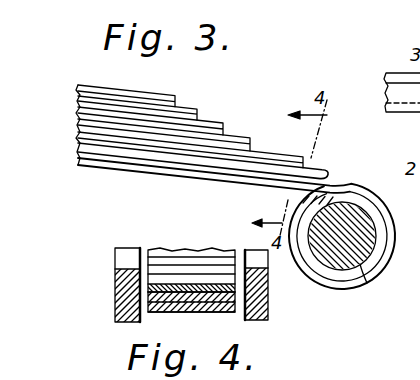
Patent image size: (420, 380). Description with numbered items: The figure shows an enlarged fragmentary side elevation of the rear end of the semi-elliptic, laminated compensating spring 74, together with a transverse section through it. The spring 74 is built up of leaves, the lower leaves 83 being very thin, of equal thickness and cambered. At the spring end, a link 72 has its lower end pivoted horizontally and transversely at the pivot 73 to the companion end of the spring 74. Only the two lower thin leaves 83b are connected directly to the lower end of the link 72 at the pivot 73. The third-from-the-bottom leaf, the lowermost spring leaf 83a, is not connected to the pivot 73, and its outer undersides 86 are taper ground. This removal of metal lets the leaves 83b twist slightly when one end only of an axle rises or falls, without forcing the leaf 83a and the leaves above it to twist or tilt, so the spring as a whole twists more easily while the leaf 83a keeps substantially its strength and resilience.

In FIG. 3, the compensating spring 74 is at (157, 91).
In FIG. 3, the lower leaves 83 is at (254, 135).
In FIG. 4, the lower leaves 83 is at (209, 273).
In FIG. 3, the lowermost spring leaf 83a is at (316, 166).
In FIG. 4, the lowermost spring leaf 83a is at (148, 292).
In FIG. 3, the lower thin leaves 83b is at (258, 186).
In FIG. 4, the lower thin leaves 83b is at (146, 310).
In FIG. 3, the outer undersides 86 is at (327, 181).
In FIG. 4, the outer undersides 86 is at (235, 292).
In FIG. 3, the pivot 73 is at (368, 263).
In FIG. 4, the link 72 is at (121, 261).